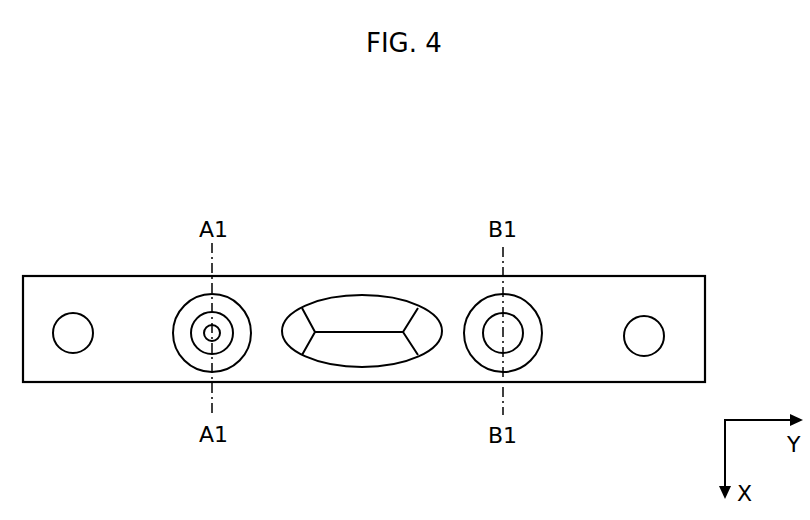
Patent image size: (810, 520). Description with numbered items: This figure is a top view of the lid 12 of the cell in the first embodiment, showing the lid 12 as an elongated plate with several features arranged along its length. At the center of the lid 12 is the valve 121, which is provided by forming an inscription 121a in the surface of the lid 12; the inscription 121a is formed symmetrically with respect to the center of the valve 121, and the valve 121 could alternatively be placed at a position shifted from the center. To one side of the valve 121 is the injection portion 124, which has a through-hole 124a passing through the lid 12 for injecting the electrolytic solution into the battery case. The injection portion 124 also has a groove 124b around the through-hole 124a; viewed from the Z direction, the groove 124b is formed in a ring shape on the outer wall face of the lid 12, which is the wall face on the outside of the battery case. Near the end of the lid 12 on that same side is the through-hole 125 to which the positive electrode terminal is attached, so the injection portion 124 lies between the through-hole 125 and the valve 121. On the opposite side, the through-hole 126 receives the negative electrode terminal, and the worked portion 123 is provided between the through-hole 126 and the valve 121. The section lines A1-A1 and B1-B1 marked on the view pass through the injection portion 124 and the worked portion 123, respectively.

The lid 12 is at (716, 262).
The valve 121 is at (364, 378).
The inscription 121a is at (337, 332).
The worked portion 123 is at (523, 348).
The injection portion 124 is at (242, 368).
The through-hole 124a is at (205, 337).
The groove 124b is at (188, 320).
The through-hole 125 is at (73, 313).
The through-hole 126 is at (644, 316).